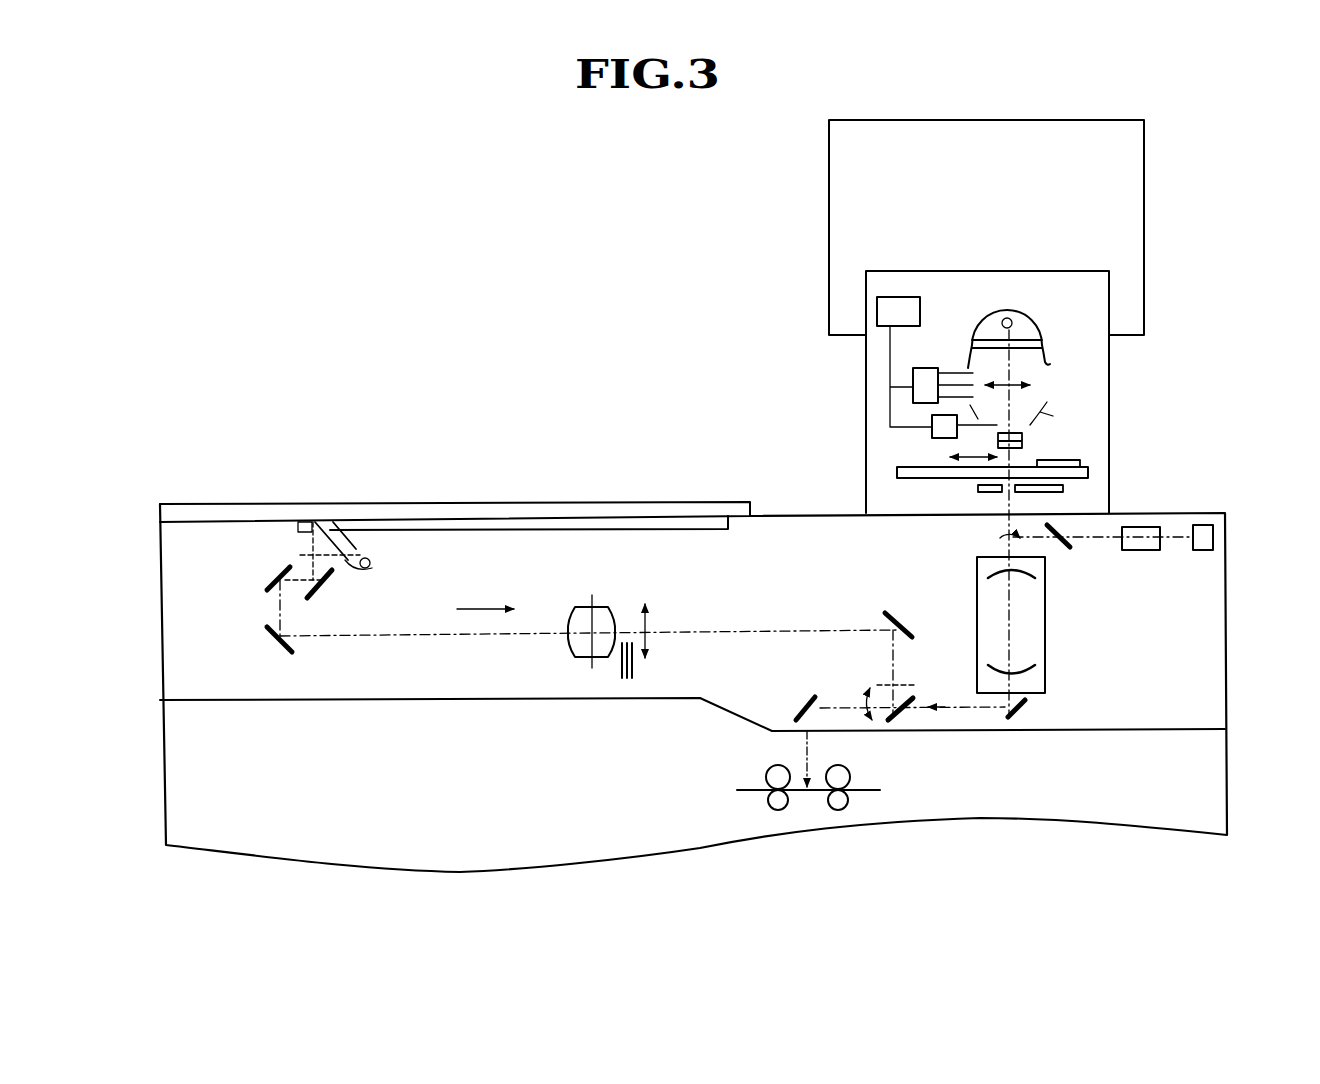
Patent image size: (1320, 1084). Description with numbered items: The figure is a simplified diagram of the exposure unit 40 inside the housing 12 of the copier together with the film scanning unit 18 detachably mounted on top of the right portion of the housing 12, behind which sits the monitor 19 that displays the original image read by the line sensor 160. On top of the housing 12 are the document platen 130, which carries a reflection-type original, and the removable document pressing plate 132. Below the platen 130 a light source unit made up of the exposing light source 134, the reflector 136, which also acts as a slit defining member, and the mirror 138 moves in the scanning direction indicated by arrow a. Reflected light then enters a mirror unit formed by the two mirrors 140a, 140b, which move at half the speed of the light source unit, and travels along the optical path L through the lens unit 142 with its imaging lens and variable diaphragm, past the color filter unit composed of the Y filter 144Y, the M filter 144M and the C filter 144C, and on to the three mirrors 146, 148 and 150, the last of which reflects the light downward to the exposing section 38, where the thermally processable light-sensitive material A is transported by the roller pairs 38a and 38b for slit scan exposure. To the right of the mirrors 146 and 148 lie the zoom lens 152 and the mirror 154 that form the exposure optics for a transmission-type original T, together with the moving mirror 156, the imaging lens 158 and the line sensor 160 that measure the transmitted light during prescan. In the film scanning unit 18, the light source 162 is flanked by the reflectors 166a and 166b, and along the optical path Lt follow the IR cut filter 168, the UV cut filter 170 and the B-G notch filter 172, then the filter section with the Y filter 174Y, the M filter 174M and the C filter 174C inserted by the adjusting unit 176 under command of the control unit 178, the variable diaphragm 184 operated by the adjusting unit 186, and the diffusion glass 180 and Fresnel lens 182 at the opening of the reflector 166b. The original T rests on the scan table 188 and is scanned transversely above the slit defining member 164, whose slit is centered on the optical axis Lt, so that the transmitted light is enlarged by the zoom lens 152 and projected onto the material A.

The housing 12 is at (1225, 623).
The film scanning unit 18 is at (866, 418).
The monitor 19 is at (858, 160).
The exposing section 38 is at (807, 770).
The roller pair 38a is at (850, 770).
The roller pair 38b is at (766, 770).
The exposure unit 40 is at (539, 578).
The document platen 130 is at (404, 528).
The document pressing plate 132 is at (708, 513).
The exposing light source 134 is at (372, 560).
The reflector 136 is at (372, 568).
The mirror 138 is at (332, 583).
The mirror 140a is at (278, 572).
The mirror 140b is at (268, 640).
The lens unit 142 is at (610, 603).
The Y filter 144Y is at (633, 672).
The M filter 144M is at (627, 680).
The C filter 144C is at (622, 680).
The mirror 146 is at (900, 610).
The mirror 148 is at (915, 716).
The mirror 150 is at (798, 702).
The zoom lens 152 is at (1047, 625).
The mirror 154 is at (1022, 705).
The moving mirror 156 is at (1070, 547).
The imaging lens 158 is at (1150, 550).
The line sensor 160 is at (875, 306).
The light source 162 is at (1007, 310).
The slit defining member 164 is at (1063, 488).
The reflector 166a is at (1022, 310).
The reflector 166b is at (1023, 402).
The IR cut filter 168 is at (1035, 318).
The UV cut filter 170 is at (1030, 349).
The B-G notch filter 172 is at (1043, 372).
The Y filter 174Y is at (948, 368).
The M filter 174M is at (958, 372).
The C filter 174C is at (970, 372).
The adjusting unit 176 is at (913, 396).
The control unit 178 is at (880, 297).
The diffusion glass 180 is at (1020, 413).
The Fresnel lens 182 is at (1017, 442).
The variable diaphragm 184 is at (975, 420).
The adjusting unit 186 is at (932, 430).
The scan table 188 is at (1095, 470).
The transmission-type original T is at (1080, 462).
The thermally processable light-sensitive material A is at (870, 792).
The optical path L is at (447, 634).
The optical path Lt is at (1005, 590).
The scanning direction arrow a is at (483, 607).